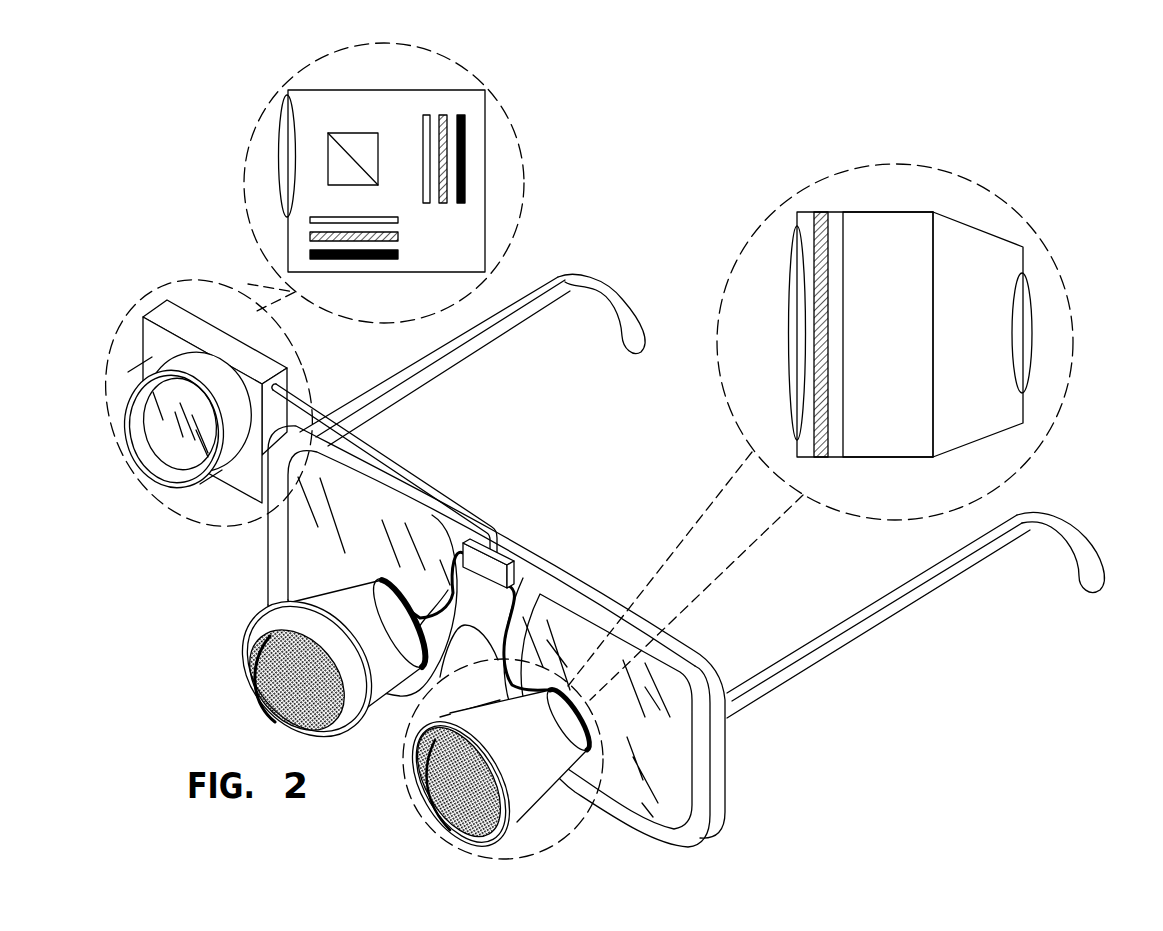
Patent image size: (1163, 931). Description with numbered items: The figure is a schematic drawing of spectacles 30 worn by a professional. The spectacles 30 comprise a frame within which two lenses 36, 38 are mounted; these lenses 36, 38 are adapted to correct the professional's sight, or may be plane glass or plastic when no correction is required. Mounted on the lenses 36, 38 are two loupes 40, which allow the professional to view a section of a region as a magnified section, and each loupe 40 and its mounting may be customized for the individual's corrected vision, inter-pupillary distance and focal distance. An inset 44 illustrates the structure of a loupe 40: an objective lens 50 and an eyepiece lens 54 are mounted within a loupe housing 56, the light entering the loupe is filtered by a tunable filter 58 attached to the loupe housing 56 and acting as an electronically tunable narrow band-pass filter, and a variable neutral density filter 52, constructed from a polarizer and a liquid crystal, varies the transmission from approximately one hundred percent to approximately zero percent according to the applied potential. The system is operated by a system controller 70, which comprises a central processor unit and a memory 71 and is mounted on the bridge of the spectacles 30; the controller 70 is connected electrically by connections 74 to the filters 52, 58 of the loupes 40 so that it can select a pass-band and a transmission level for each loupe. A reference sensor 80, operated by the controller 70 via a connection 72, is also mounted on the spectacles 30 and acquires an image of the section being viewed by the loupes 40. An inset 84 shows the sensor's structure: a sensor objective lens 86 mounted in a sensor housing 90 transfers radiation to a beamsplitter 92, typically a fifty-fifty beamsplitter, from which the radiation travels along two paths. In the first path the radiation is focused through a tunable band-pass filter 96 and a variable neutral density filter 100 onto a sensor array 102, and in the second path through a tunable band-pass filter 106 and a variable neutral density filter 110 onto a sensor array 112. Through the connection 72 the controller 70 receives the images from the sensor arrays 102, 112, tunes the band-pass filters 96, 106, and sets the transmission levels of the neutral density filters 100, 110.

The spectacles 30 is at (800, 667).
The lens 36 is at (643, 807).
The lens 38 is at (290, 564).
The loupe 40 is at (290, 622).
The inset 44 is at (1020, 214).
The objective lens 50 is at (795, 325).
The variable neutral density filter 52 is at (820, 212).
The eyepiece lens 54 is at (1025, 318).
The loupe housing 56 is at (973, 226).
The tunable filter 58 is at (860, 226).
The system controller 70 is at (519, 560).
The memory 71 is at (496, 494).
The connection 72 is at (355, 443).
The connections 74 is at (453, 528).
The reference sensor 80 is at (163, 310).
The inset 84 is at (525, 172).
The sensor objective lens 86 is at (283, 128).
The sensor housing 90 is at (383, 90).
The beamsplitter 92 is at (355, 133).
The tunable band-pass filter 96 is at (426, 113).
The variable neutral density filter 100 is at (443, 112).
The sensor array 102 is at (462, 205).
The tunable band-pass filter 106 is at (308, 220).
The variable neutral density filter 110 is at (308, 237).
The sensor array 112 is at (308, 255).